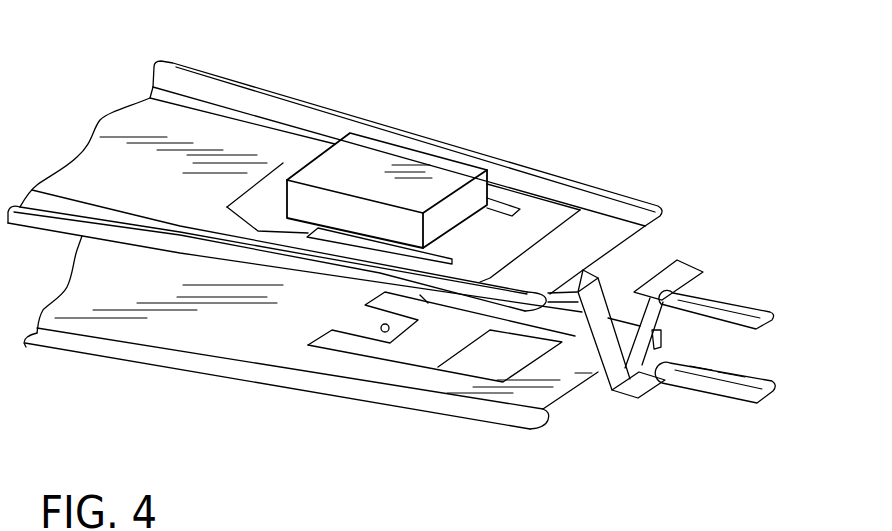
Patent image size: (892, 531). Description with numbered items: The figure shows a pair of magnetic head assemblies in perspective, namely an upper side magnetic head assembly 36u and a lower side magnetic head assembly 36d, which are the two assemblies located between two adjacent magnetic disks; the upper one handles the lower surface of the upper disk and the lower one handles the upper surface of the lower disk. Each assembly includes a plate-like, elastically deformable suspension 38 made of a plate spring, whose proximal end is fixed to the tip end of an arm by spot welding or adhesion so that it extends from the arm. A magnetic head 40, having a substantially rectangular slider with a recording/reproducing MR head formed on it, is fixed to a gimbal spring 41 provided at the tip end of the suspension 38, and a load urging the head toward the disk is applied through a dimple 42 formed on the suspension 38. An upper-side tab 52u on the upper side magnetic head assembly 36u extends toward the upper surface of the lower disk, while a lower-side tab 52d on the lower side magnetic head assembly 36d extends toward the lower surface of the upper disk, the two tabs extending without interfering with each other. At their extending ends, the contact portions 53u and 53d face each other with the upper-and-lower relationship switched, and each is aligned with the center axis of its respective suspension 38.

The upper side magnetic head assembly 36u is at (249, 83).
The lower side magnetic head assembly 36d is at (237, 388).
The suspension 38 is at (293, 117).
The magnetic head 40 is at (440, 163).
The gimbal spring 41 is at (512, 197).
The dimple 42 is at (383, 333).
The lower-side tab 52d is at (692, 267).
The contact portion 53d is at (740, 310).
The upper-side tab 52u is at (622, 399).
The contact portion 53u is at (717, 383).